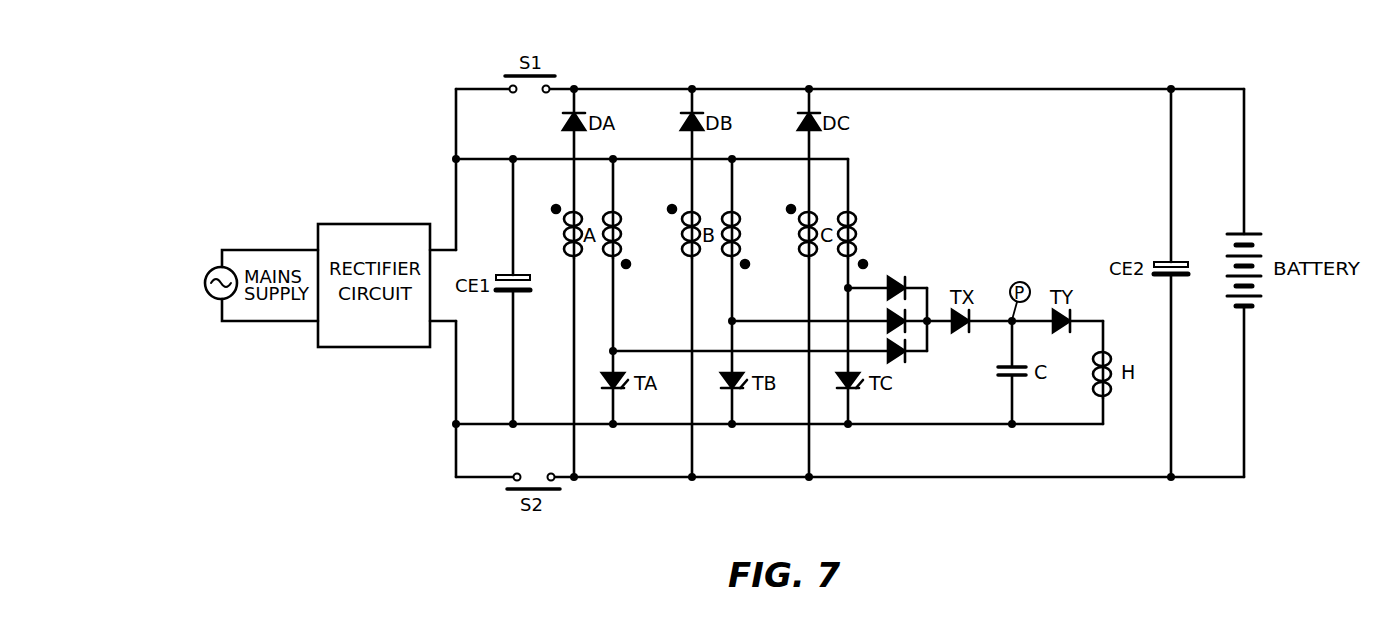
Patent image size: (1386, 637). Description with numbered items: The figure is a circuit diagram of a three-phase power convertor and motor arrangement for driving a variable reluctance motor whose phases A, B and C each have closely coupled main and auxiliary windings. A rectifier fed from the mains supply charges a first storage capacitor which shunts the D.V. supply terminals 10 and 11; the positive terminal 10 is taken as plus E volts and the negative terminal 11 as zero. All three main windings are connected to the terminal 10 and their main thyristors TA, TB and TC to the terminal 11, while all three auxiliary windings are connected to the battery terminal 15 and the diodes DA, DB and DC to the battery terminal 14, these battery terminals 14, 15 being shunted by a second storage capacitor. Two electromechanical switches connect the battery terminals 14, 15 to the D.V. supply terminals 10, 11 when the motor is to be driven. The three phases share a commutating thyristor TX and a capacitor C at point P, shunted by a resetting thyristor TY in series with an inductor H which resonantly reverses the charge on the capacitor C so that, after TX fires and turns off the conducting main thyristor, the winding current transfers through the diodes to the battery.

The D.V. supply terminal 10 is at (455, 158).
The D.V. supply terminal 11 is at (645, 424).
The battery terminal 14 is at (620, 89).
The battery terminal 15 is at (626, 477).